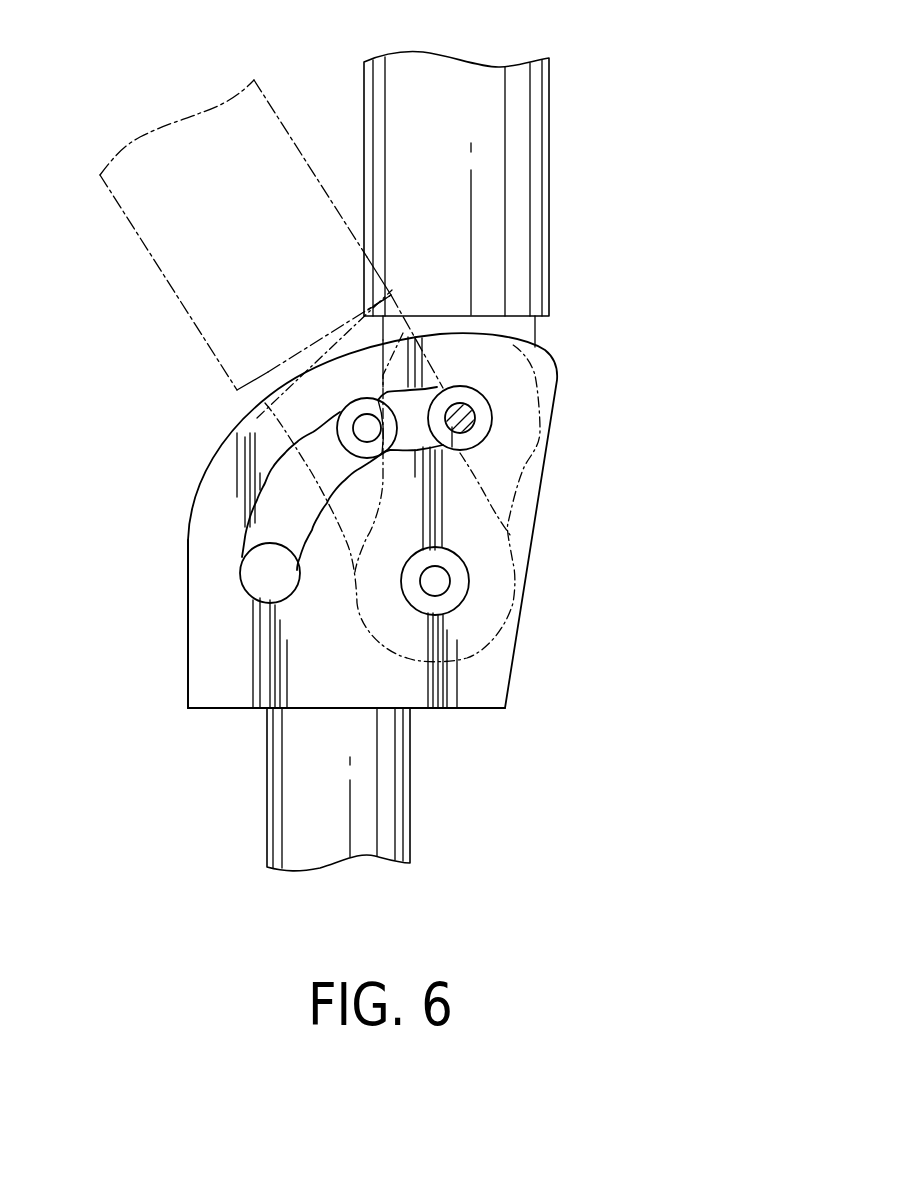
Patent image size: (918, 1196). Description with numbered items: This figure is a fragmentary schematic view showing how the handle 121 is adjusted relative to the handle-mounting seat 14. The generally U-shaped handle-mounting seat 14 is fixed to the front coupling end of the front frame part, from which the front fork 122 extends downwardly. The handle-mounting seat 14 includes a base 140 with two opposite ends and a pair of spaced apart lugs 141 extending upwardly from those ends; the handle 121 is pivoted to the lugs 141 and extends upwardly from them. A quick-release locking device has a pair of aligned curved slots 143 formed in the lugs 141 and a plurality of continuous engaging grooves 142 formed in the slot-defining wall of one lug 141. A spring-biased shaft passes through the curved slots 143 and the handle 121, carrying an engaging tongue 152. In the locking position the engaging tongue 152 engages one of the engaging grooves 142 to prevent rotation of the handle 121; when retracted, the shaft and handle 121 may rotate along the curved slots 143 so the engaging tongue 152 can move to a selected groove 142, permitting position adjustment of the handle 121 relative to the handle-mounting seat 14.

The handle-mounting seat 14 is at (535, 510).
The handle 121 is at (533, 213).
The front fork 122 is at (393, 788).
The base 140 is at (226, 710).
The lugs 141 is at (233, 636).
The engaging grooves 142 is at (252, 492).
The curved slots 143 is at (267, 539).
The engaging tongue 152 is at (483, 413).